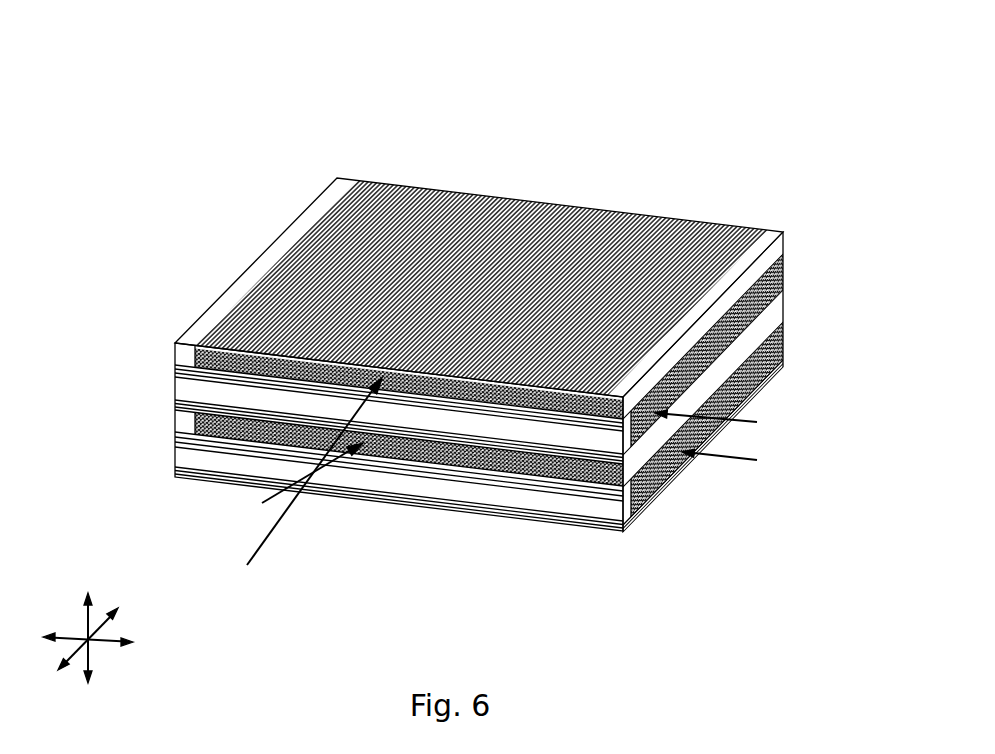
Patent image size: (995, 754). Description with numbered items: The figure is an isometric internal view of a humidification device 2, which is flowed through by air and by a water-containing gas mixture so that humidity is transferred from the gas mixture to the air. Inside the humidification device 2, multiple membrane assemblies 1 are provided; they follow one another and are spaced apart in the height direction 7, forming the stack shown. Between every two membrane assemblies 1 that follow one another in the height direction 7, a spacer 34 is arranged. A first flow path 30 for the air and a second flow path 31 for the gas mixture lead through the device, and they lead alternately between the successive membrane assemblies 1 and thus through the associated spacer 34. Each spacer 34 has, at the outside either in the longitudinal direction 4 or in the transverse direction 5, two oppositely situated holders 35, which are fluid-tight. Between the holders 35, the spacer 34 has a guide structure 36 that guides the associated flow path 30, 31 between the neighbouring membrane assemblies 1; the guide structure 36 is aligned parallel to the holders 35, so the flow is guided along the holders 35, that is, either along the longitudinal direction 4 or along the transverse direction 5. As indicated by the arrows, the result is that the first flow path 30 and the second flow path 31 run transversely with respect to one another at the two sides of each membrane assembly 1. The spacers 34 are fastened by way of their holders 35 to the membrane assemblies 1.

The humidification device 2 is at (714, 132).
The membrane assembly 1 is at (797, 260).
The holder 35 is at (340, 180).
The guide structure 36 is at (541, 198).
The spacer 34 is at (165, 352).
The second flow path 31 is at (757, 470).
The first flow path 30 is at (272, 494).
The longitudinal direction 4 is at (78, 640).
The transverse direction 5 is at (96, 622).
The height direction 7 is at (88, 620).